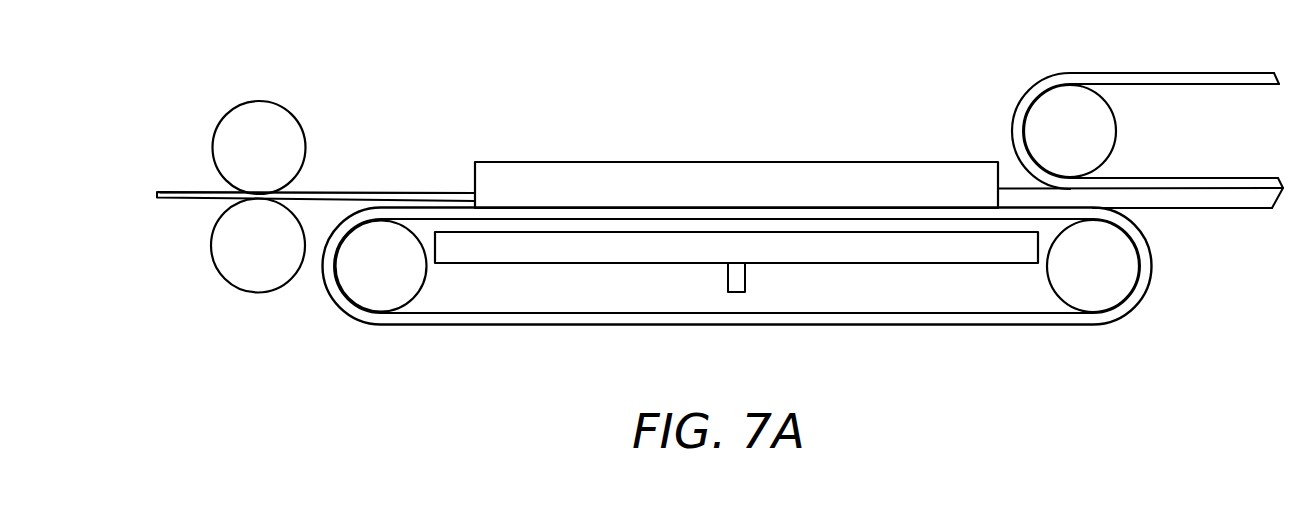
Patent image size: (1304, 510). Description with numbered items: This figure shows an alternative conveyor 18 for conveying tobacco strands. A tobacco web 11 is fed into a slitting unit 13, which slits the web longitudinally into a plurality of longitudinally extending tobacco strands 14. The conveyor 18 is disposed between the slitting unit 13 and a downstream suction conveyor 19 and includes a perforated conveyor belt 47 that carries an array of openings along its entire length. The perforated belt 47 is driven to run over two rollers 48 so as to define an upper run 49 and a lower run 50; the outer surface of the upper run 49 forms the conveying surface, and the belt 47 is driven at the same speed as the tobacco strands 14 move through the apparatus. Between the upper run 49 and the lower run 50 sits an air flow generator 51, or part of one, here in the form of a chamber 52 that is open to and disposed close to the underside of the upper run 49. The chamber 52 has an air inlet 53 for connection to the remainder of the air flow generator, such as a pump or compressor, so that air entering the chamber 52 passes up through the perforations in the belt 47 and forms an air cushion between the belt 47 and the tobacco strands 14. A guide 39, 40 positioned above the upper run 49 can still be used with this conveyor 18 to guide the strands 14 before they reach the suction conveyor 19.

The tobacco web 11 is at (174, 191).
The slitting unit 13 is at (258, 100).
The tobacco strands 14 is at (375, 191).
The conveyor 18 is at (511, 107).
The suction conveyor 19 is at (1170, 70).
The guide 39 is at (736, 157).
The heater housing 40 is at (659, 168).
The perforated conveyor belt 47 is at (1020, 316).
The rollers 48 is at (378, 292).
The upper run 49 is at (914, 190).
The lower run 50 is at (835, 316).
The air flow generator 51 is at (736, 307).
The chamber 52 is at (585, 250).
The air inlet 53 is at (743, 293).